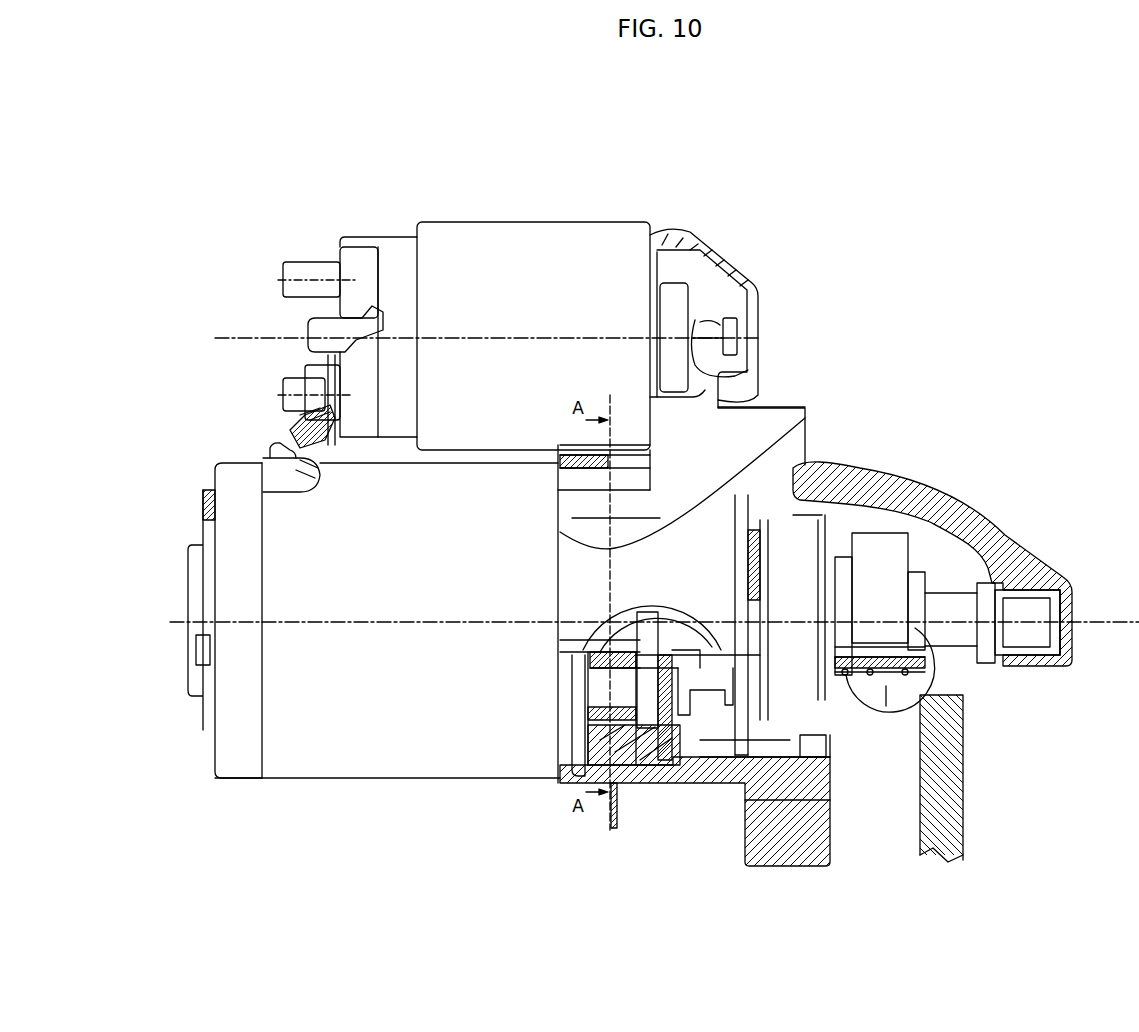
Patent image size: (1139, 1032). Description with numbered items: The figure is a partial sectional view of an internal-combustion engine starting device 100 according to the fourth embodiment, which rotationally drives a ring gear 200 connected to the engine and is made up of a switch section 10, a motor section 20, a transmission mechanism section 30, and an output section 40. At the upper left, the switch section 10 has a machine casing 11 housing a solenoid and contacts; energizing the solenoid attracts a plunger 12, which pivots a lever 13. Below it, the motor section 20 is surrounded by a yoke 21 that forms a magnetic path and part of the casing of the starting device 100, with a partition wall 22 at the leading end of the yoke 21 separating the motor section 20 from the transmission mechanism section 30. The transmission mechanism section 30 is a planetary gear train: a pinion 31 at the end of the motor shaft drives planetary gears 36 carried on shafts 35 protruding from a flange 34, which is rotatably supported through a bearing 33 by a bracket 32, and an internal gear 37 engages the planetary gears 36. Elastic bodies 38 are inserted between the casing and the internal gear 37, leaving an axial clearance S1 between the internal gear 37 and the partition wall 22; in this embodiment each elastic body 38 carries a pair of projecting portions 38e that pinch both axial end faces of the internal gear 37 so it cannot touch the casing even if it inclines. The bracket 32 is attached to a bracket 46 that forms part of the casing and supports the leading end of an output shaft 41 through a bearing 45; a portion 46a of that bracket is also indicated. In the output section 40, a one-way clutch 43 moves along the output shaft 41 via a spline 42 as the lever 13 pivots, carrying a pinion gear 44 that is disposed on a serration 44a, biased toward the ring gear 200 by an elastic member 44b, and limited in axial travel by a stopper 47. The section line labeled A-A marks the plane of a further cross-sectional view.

The switch section 10 is at (538, 208).
The machine casing 11 is at (593, 238).
The plunger 12 is at (680, 300).
The lever 13 is at (700, 335).
The motor section 20 is at (252, 792).
The yoke 21 is at (355, 733).
The partition wall 22 is at (557, 683).
The transmission mechanism section 30 is at (572, 862).
The pinion 31 is at (557, 658).
The bracket 32 is at (718, 757).
The bearing 33 is at (745, 765).
The flange 34 is at (650, 610).
The shafts 35 is at (697, 610).
The planetary gears 36 is at (616, 783).
The internal gear 37 is at (652, 770).
The elastic bodies 38 is at (680, 765).
The projecting portions 38e is at (568, 705).
The axial clearance S1 is at (585, 680).
The output section 40 is at (950, 668).
The output shaft 41 is at (985, 575).
The spline 42 is at (795, 835).
The one-way clutch 43 is at (828, 765).
The pinion gear 44 is at (892, 712).
The serration 44a is at (878, 668).
The elastic member 44b is at (868, 700).
The bearing 45 is at (1055, 672).
The bracket 46 is at (1010, 543).
The cap flange 46a is at (818, 835).
The stopper 47 is at (990, 668).
The starting device 100 is at (955, 340).
The ring gear 200 is at (965, 770).